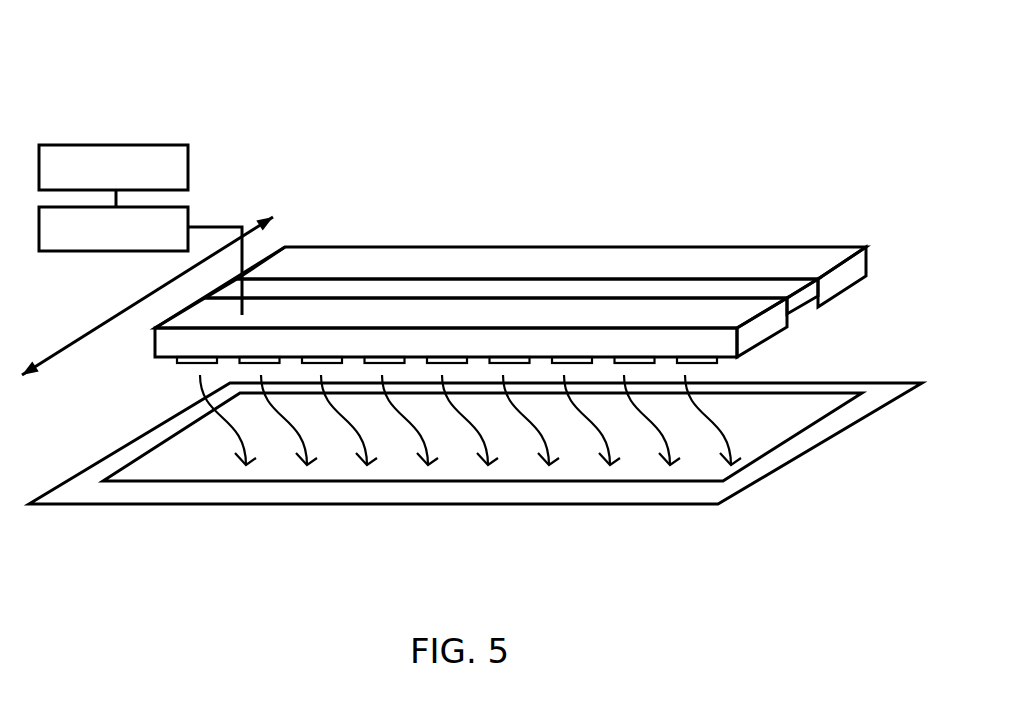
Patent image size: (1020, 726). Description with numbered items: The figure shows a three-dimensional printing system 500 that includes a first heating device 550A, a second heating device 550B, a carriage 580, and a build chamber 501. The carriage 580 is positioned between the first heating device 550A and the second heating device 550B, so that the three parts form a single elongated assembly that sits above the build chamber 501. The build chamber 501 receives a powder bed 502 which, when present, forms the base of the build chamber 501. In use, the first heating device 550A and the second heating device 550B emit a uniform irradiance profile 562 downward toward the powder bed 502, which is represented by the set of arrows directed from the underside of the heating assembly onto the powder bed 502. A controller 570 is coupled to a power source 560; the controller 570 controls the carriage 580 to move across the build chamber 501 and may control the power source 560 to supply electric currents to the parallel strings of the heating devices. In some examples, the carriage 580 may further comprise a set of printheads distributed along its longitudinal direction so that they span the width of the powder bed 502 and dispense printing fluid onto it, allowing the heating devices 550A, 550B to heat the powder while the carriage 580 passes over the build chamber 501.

The three-dimensional printing system 500 is at (450, 182).
The build chamber 501 is at (67, 498).
The powder bed 502 is at (197, 487).
The first heating device 550A is at (312, 310).
The second heating device 550B is at (863, 225).
The power source 560 is at (70, 237).
The uniform irradiance profile 562 is at (728, 405).
The controller 570 is at (158, 173).
The carriage 580 is at (653, 288).